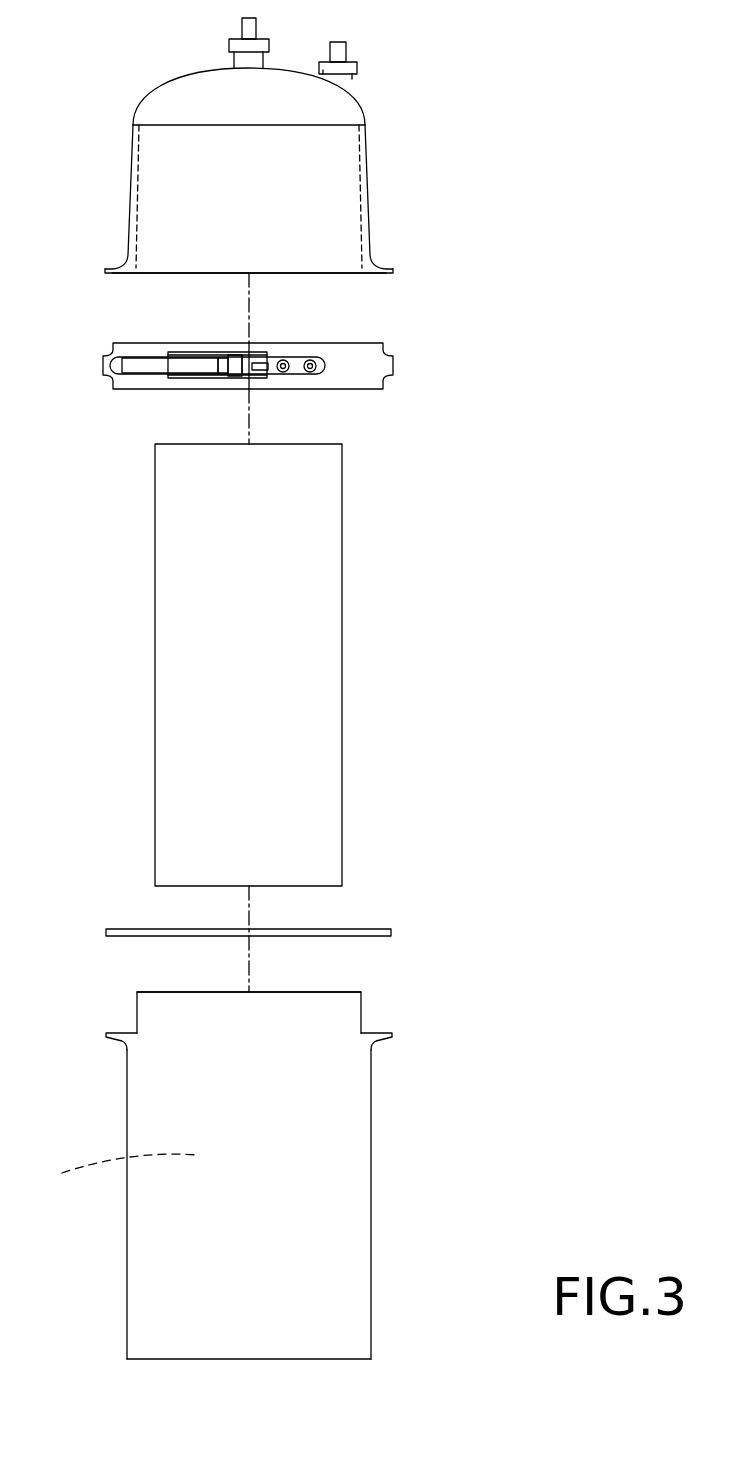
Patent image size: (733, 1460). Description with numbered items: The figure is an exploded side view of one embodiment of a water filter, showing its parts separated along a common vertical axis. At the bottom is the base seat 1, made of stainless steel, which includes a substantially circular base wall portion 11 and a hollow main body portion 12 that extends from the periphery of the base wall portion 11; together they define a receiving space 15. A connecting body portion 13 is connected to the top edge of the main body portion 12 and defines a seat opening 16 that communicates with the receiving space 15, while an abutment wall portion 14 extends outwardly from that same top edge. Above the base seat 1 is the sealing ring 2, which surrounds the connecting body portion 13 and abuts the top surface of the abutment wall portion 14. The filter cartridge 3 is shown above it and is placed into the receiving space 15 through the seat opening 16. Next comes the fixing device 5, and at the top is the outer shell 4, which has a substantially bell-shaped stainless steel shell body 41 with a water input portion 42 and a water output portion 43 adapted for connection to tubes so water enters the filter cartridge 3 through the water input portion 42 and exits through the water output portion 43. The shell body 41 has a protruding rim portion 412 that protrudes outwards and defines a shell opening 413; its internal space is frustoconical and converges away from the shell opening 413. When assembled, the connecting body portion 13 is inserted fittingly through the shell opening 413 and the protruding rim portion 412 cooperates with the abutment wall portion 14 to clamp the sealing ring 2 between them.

The base seat 1 is at (291, 1151).
The base wall portion 11 is at (340, 1358).
The main body portion 12 is at (371, 1188).
The connecting body portion 13 is at (362, 1012).
The abutment wall portion 14 is at (392, 1033).
The receiving space 15 is at (113, 1174).
The seat opening 16 is at (178, 991).
The sealing ring 2 is at (383, 930).
The filter cartridge 3 is at (302, 633).
The outer shell 4 is at (315, 167).
The shell body 41 is at (367, 152).
The protruding rim portion 412 is at (383, 270).
The shell opening 413 is at (335, 278).
The water input portion 42 is at (250, 32).
The water output portion 43 is at (337, 55).
The fixing device 5 is at (418, 365).